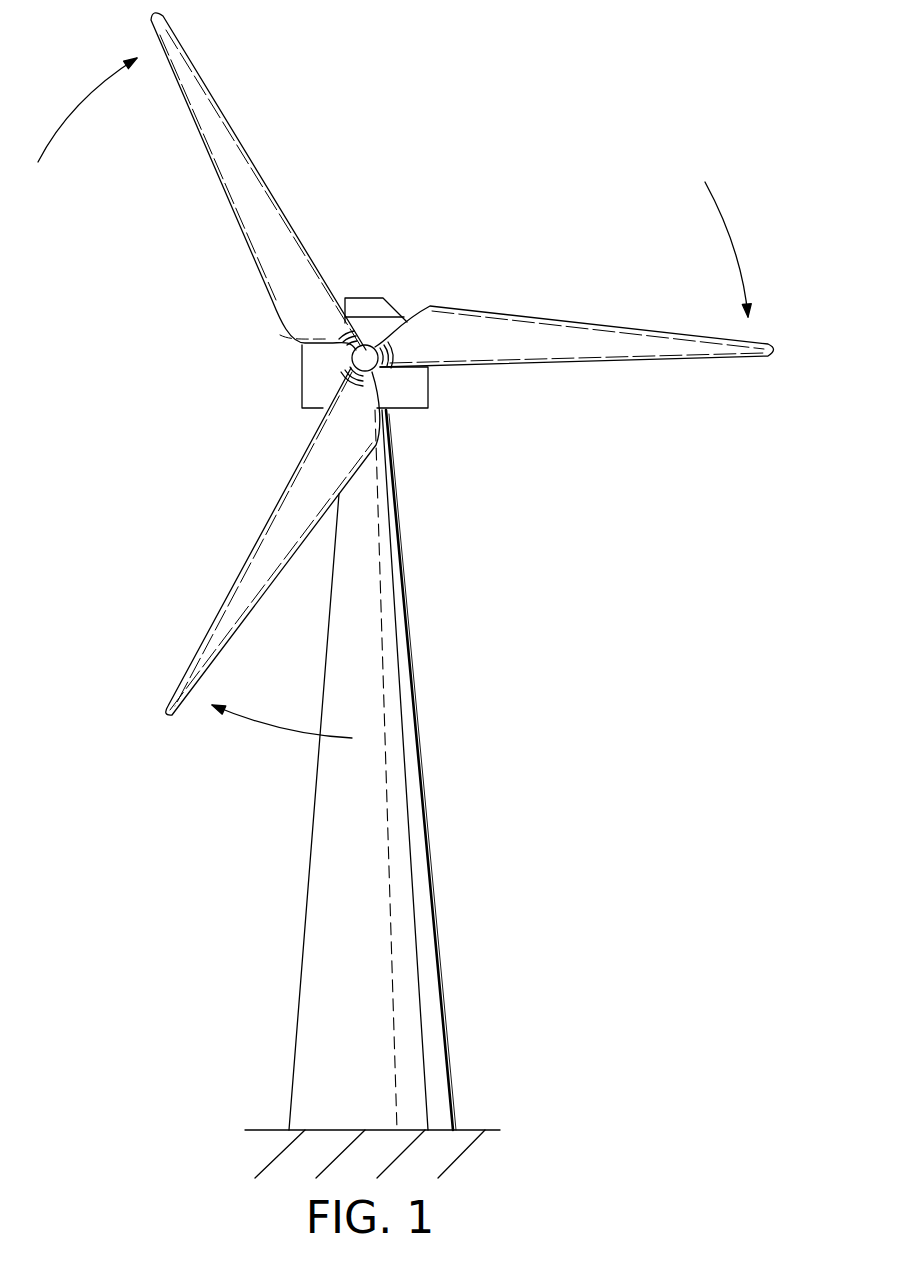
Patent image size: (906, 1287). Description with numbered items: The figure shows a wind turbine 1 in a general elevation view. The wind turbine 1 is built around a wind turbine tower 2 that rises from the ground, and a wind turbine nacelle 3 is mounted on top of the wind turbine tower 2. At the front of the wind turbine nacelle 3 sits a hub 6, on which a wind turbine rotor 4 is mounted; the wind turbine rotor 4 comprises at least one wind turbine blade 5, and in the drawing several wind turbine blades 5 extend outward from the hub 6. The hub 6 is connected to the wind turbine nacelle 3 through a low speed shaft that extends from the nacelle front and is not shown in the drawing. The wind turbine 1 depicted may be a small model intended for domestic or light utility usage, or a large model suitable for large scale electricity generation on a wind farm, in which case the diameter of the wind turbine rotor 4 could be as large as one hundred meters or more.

The wind turbine 1 is at (406, 595).
The wind turbine tower 2 is at (427, 817).
The wind turbine nacelle 3 is at (424, 391).
The wind turbine rotor 4 is at (406, 375).
The wind turbine blade 5 is at (683, 342).
The hub 6 is at (366, 354).